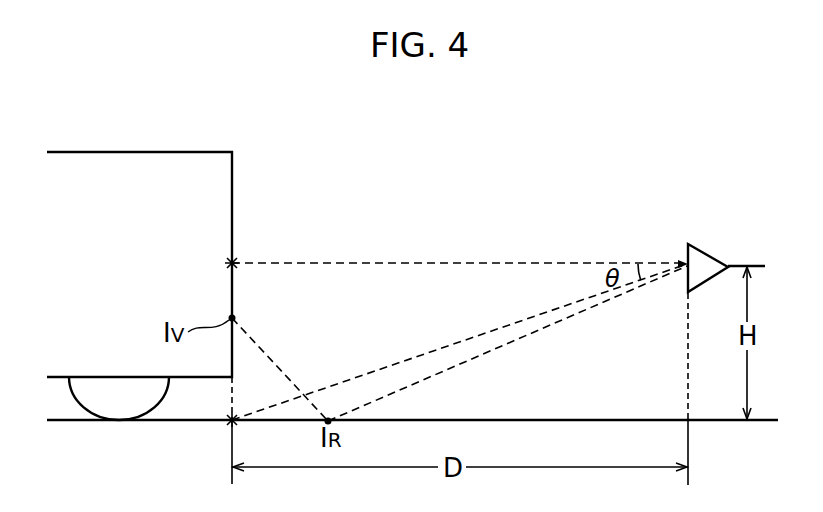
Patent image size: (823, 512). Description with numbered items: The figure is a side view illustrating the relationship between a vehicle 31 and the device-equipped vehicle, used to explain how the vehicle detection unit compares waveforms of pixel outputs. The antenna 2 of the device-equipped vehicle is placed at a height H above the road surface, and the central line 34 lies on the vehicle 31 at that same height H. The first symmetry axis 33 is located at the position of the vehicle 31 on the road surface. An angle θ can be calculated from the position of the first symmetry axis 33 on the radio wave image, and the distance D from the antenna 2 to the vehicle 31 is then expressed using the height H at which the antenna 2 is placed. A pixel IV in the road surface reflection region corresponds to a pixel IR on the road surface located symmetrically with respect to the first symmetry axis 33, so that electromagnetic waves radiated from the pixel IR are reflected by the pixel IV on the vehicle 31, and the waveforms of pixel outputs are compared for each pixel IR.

The antenna 2 is at (702, 258).
The vehicle 31 is at (127, 152).
The first symmetry axis 33 is at (229, 423).
The central line 34 is at (228, 264).